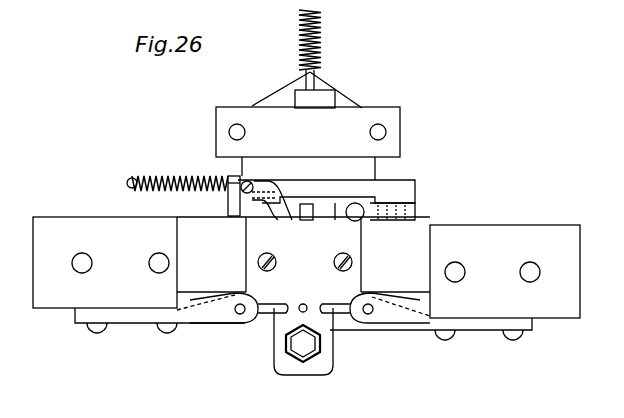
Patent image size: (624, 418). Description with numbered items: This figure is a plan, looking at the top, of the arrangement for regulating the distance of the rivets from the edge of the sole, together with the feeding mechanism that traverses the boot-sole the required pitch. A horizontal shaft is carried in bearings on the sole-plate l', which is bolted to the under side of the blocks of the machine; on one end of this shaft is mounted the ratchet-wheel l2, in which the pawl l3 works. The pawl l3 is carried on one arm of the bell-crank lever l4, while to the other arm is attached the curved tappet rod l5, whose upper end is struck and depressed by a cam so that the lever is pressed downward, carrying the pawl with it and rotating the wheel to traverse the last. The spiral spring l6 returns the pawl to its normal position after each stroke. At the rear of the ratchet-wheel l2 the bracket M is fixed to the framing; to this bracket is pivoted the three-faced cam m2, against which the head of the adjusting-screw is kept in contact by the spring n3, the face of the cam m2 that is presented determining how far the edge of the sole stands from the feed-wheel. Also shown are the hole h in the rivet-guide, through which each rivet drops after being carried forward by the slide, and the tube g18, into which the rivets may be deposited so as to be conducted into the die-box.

The spring n3 is at (322, 38).
The cam m2 is at (340, 97).
The bracket M is at (308, 132).
The spiral spring l6 is at (182, 178).
The bell-crank lever l4 is at (416, 186).
The tappet rod l5 is at (416, 212).
The pawl l3 is at (284, 220).
The ratchet-wheel l2 is at (338, 212).
The sole-plate l' is at (306, 303).
The hole h is at (302, 299).
The tube g18 is at (282, 304).